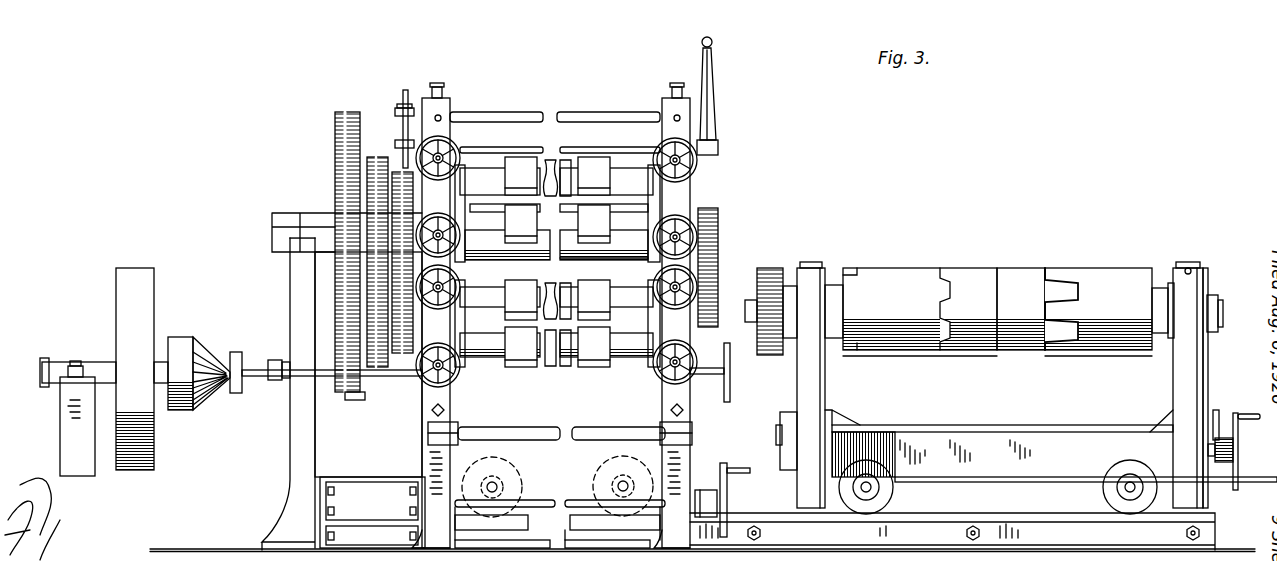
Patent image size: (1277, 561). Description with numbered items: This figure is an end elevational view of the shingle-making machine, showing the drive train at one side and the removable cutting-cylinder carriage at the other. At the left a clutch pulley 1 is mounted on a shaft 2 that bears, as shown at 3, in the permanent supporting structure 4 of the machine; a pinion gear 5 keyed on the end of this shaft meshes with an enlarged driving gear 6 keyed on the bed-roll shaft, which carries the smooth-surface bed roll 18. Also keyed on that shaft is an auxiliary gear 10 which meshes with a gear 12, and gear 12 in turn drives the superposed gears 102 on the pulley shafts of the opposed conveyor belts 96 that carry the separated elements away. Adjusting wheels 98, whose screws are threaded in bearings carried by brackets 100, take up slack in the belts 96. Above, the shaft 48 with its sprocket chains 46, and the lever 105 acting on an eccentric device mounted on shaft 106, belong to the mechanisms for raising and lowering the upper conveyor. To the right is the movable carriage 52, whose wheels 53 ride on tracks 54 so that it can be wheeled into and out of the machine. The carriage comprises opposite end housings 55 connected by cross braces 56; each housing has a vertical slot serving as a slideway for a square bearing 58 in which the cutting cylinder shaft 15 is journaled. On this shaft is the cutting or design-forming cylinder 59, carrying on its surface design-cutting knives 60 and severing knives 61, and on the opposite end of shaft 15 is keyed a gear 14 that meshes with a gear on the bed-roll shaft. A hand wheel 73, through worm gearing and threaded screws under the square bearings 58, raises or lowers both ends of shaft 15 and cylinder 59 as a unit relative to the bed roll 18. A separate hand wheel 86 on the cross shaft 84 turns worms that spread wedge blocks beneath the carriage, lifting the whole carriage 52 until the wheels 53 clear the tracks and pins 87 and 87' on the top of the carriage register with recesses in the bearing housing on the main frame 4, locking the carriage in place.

The clutch pulley 1 is at (154, 464).
The shaft 2 is at (160, 362).
The bearing 3 is at (284, 387).
The supporting structure 4 is at (318, 444).
The pinion gear 5 is at (356, 396).
The driving gear 6 is at (345, 112).
The auxiliary gear 10 is at (375, 157).
The gear 12 is at (335, 338).
The gear 14 is at (770, 270).
The cutting cylinder shaft 15 is at (1222, 314).
The bed roll 18 is at (613, 258).
The sprocket chains 46 is at (405, 90).
The shaft 48 is at (612, 112).
The movable carriage 52 is at (1212, 383).
The wheels 53 is at (613, 432).
The tracks 54 is at (992, 513).
The end housings 55 is at (818, 268).
The cross braces 56 is at (1040, 430).
The square bearings 58 is at (790, 286).
The cutting cylinder 59 is at (970, 272).
The design-cutting knives 60 is at (1065, 280).
The severing knives 61 is at (1000, 284).
The hand wheel 73 is at (1245, 496).
The shaft 84 is at (545, 500).
The hand wheel 86 is at (725, 463).
The pin 87 is at (999, 253).
The pin 87' is at (1210, 371).
The conveyor belts 96 is at (522, 166).
The adjusting wheels 98 is at (455, 152).
The brackets 100 is at (470, 118).
The gears 102 is at (410, 369).
The lever 105 is at (716, 46).
The shaft 106 is at (642, 150).